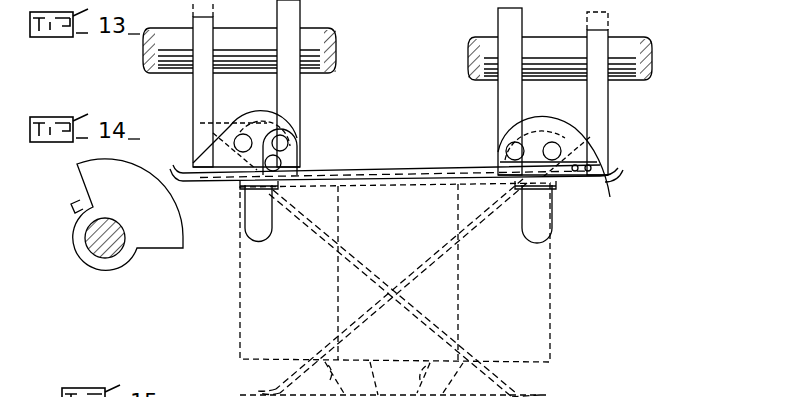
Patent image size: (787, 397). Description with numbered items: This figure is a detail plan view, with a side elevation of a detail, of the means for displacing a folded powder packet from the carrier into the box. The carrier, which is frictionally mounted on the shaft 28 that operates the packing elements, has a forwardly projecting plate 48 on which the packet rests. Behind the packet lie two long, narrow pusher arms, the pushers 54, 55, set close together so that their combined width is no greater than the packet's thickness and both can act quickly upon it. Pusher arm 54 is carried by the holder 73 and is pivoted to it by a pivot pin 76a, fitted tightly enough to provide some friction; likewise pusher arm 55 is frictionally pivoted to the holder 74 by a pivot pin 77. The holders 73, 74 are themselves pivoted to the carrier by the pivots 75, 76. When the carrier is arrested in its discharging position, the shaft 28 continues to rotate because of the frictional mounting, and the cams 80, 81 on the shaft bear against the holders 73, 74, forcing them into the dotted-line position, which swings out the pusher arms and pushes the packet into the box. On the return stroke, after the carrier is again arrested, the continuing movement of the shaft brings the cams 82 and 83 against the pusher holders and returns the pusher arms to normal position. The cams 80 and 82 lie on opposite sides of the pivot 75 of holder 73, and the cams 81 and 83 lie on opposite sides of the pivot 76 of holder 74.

In FIG. 13, the shaft 28 is at (240, 36).
In FIG. 14, the shaft 28 is at (92, 255).
In FIG. 13, the cam 83 is at (202, 90).
In FIG. 14, the cam 83 is at (166, 242).
In FIG. 13, the holder 74 is at (247, 120).
In FIG. 13, the cam 81 is at (295, 93).
In FIG. 13, the pivot 76 is at (241, 142).
In FIG. 13, the pivot pin 77 is at (285, 144).
In FIG. 13, the cam 80 is at (507, 99).
In FIG. 13, the cam 82 is at (606, 105).
In FIG. 13, the holder 73 is at (540, 120).
In FIG. 13, the pivot pin 76a is at (512, 150).
In FIG. 13, the pivot 75 is at (556, 151).
In FIG. 13, the pusher 54 is at (223, 183).
In FIG. 13, the pusher 55 is at (604, 184).
In FIG. 13, the plate 48 is at (533, 290).